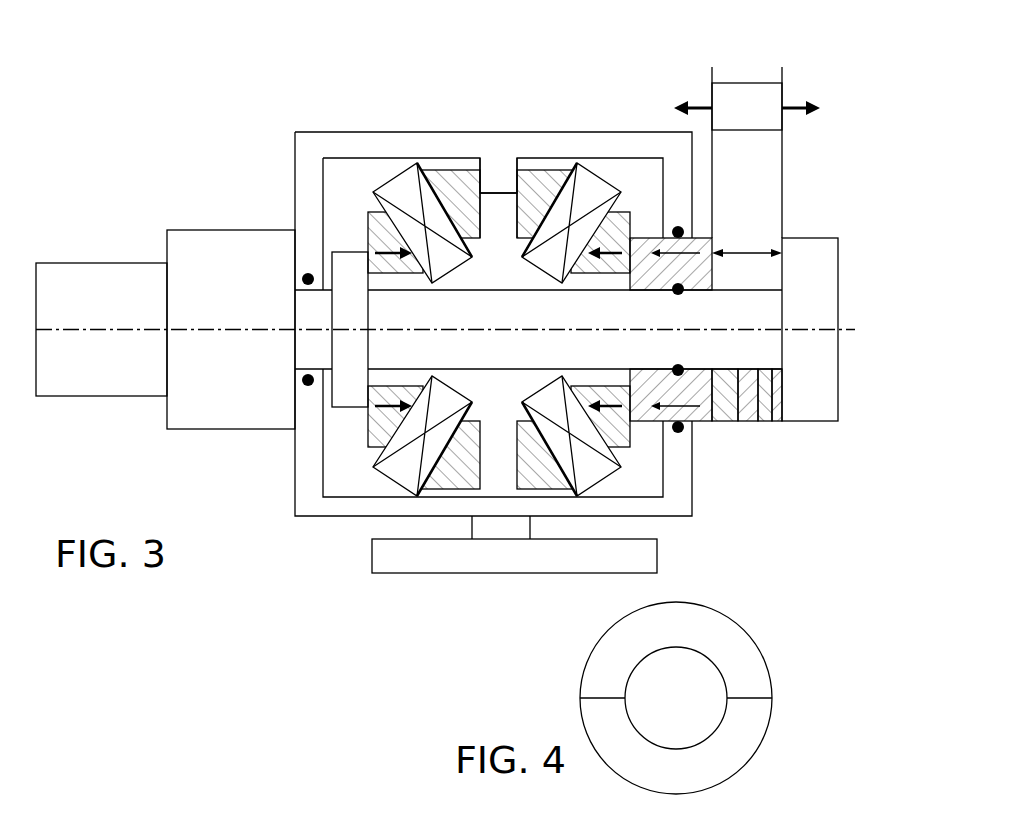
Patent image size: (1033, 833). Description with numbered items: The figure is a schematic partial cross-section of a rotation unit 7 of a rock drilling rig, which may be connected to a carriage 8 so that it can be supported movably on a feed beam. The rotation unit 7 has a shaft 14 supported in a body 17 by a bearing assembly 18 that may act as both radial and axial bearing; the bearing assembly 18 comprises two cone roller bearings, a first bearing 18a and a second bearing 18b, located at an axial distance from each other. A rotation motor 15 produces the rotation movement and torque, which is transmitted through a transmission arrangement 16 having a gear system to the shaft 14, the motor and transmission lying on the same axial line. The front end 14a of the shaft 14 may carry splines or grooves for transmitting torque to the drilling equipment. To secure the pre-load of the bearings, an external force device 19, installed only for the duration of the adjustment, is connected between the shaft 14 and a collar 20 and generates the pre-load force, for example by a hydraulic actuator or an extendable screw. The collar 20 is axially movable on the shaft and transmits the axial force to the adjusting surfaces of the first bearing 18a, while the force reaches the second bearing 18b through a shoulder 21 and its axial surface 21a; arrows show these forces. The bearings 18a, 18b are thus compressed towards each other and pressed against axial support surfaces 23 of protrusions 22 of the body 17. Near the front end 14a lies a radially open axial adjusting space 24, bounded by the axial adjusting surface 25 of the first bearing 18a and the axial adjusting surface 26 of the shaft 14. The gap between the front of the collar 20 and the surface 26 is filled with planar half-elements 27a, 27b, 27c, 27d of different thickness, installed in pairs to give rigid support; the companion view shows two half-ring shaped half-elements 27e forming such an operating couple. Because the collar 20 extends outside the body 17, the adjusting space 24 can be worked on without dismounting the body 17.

In FIG. 3, the rotation unit 7 is at (162, 139).
In FIG. 3, the carriage 8 is at (393, 560).
In FIG. 3, the shaft 14 is at (550, 342).
In FIG. 3, the front end of the shaft 14a is at (855, 363).
In FIG. 3, the rotation motor 15 is at (83, 282).
In FIG. 3, the transmission arrangement 16 is at (223, 262).
In FIG. 3, the body 17 is at (305, 177).
In FIG. 3, the bearing assembly 18 is at (483, 264).
In FIG. 3, the first bearing 18a is at (593, 188).
In FIG. 3, the second bearing 18b is at (407, 188).
In FIG. 3, the external force device 19 is at (747, 93).
In FIG. 3, the collar 20 is at (648, 248).
In FIG. 3, the shoulder 21 is at (350, 393).
In FIG. 3, the axial surface 21a is at (368, 350).
In FIG. 3, the protrusions 22 is at (497, 172).
In FIG. 3, the axial support surfaces 23 is at (483, 222).
In FIG. 3, the axial adjusting space 24 is at (764, 273).
In FIG. 3, the axial adjusting surface of the first bearing 25 is at (633, 400).
In FIG. 3, the axial adjusting surface of the shaft 26 is at (772, 282).
In FIG. 3, the half-element 27a is at (727, 427).
In FIG. 3, the half-element 27b is at (753, 423).
In FIG. 3, the half-element 27c is at (765, 416).
In FIG. 3, the half-element 27d is at (777, 423).
In FIG. 4, the half-elements 27e is at (738, 650).